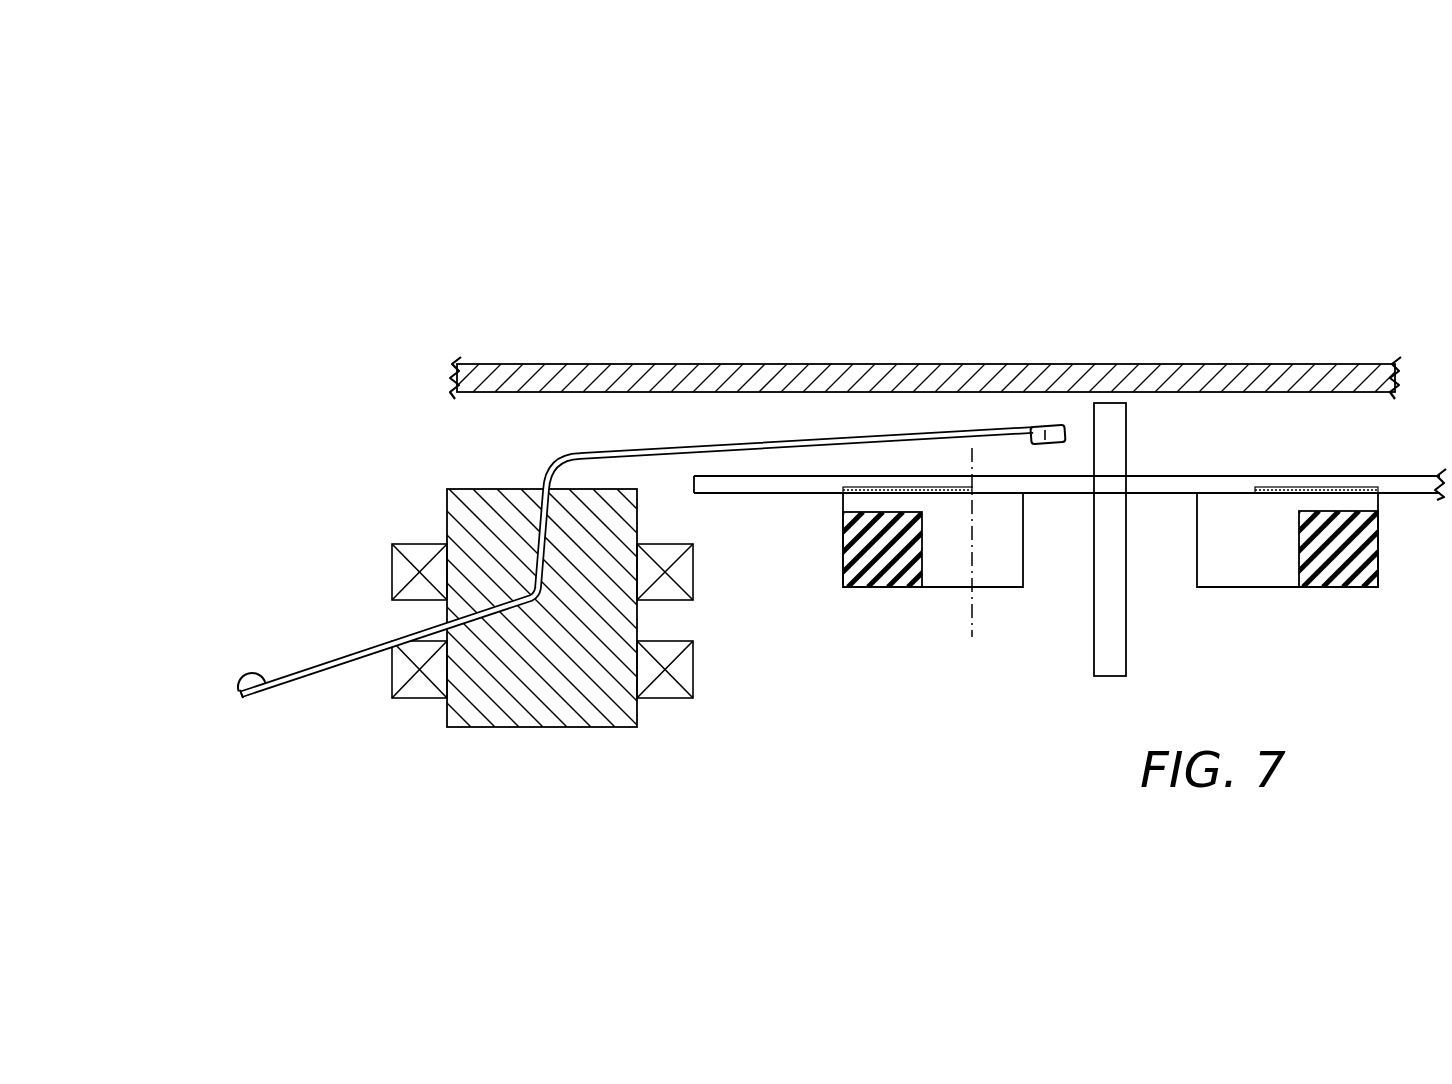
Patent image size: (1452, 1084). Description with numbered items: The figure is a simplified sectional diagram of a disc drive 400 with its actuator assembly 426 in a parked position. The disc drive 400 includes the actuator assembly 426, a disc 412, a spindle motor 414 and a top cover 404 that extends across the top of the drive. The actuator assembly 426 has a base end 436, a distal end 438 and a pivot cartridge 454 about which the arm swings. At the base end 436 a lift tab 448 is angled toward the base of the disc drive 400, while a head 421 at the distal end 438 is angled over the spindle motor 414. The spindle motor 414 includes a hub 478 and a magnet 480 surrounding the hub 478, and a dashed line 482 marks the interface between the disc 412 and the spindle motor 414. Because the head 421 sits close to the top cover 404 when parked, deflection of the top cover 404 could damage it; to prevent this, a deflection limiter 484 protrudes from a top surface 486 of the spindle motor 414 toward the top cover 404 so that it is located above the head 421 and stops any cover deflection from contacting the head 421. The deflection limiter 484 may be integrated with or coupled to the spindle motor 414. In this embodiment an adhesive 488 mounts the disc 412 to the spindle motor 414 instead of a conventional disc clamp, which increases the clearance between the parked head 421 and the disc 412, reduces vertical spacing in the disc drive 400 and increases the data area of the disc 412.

The disc drive 400 is at (1232, 313).
The top cover 404 is at (814, 376).
The disc 412 is at (855, 482).
The spindle motor 414 is at (1030, 698).
The head 421 is at (1046, 438).
The actuator assembly 426 is at (372, 491).
The base end 436 is at (234, 691).
The distal end 438 is at (1044, 419).
The lift tab 448 is at (250, 669).
The pivot cartridge 454 is at (573, 713).
The hub 478 is at (1010, 573).
The magnet 480 is at (888, 568).
The dashed line 482 is at (972, 617).
The deflection limiter 484 is at (1113, 443).
The top surface 486 is at (1165, 475).
The adhesive 488 is at (867, 495).